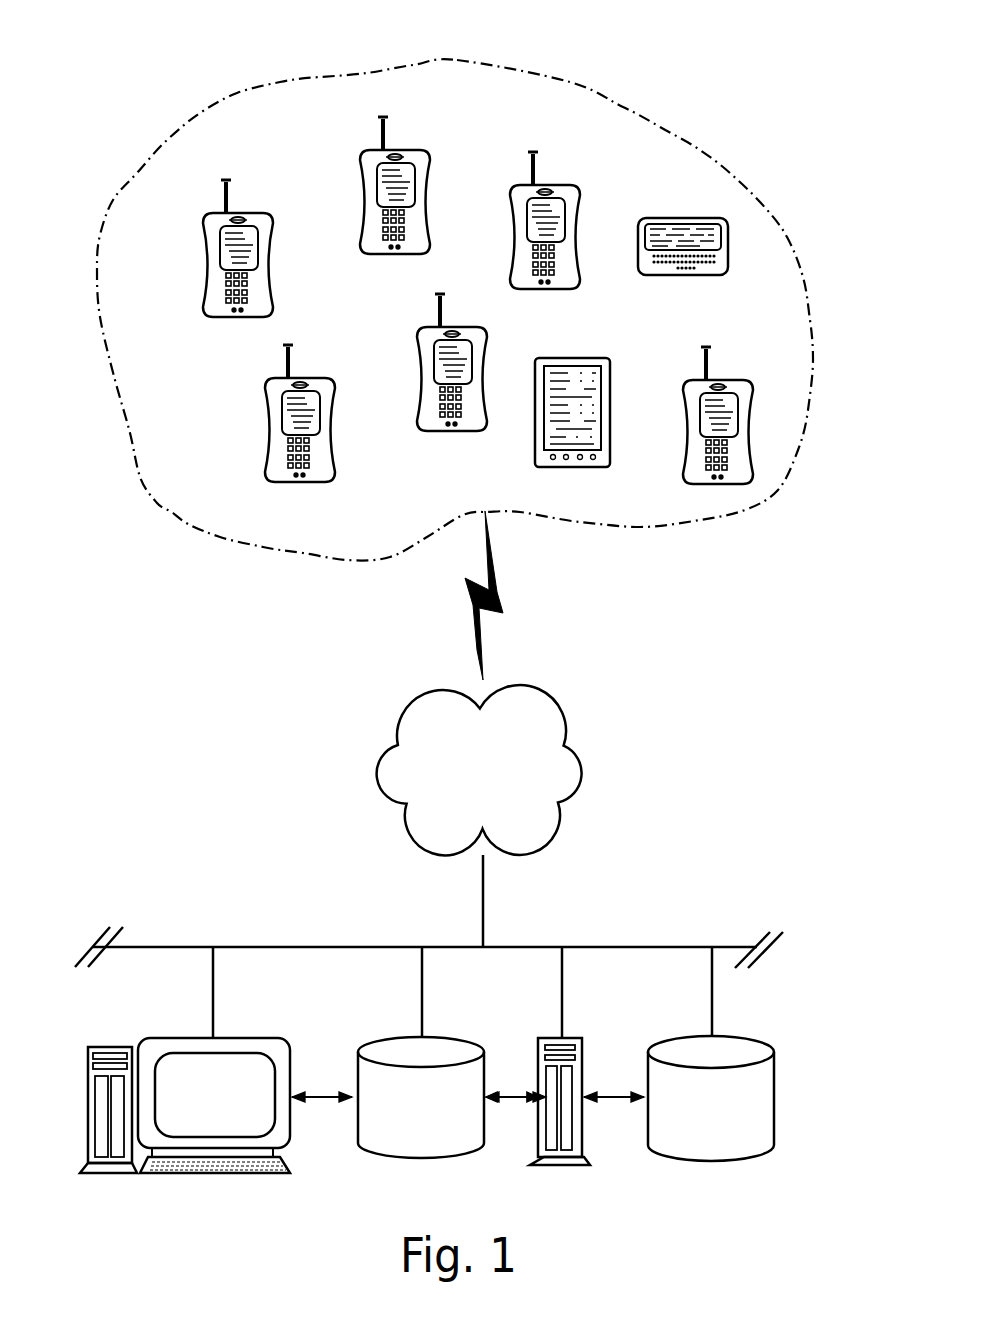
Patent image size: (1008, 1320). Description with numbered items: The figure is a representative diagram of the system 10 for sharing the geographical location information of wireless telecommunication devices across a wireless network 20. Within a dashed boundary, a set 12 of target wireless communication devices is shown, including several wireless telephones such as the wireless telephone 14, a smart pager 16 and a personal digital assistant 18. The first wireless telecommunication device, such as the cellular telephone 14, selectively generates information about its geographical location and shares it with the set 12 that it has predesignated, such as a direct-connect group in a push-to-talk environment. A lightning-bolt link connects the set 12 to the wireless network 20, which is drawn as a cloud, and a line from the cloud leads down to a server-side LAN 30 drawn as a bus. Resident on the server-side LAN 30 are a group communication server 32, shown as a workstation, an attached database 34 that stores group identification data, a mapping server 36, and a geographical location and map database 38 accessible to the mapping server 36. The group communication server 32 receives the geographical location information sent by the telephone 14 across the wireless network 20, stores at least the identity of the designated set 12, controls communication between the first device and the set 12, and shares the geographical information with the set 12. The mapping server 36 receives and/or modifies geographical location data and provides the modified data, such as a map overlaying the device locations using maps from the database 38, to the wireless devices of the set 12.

The system 10 is at (748, 78).
The set of target wireless communication devices 12 is at (163, 537).
The wireless telephone 14 is at (420, 147).
The smart pager 16 is at (688, 277).
The personal digital assistant 18 is at (535, 433).
The wireless network 20 is at (598, 768).
The server-side LAN 30 is at (243, 947).
The group communication server 32 is at (185, 1037).
The database 34 is at (357, 1127).
The mapping server 36 is at (582, 1140).
The geographical location and map database 38 is at (775, 1097).